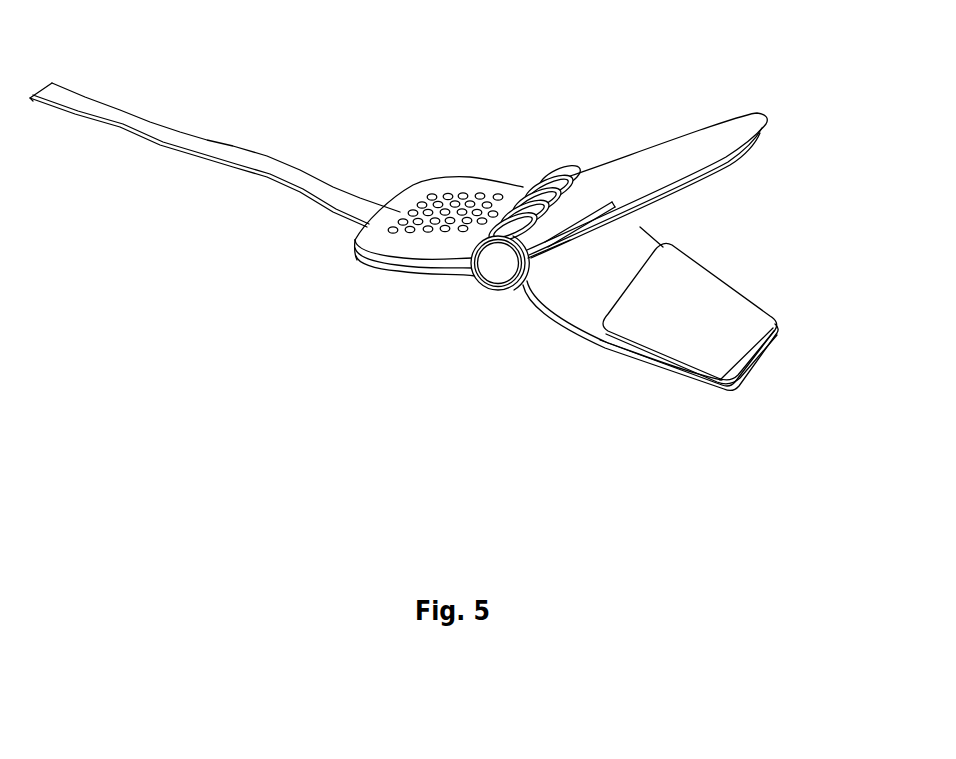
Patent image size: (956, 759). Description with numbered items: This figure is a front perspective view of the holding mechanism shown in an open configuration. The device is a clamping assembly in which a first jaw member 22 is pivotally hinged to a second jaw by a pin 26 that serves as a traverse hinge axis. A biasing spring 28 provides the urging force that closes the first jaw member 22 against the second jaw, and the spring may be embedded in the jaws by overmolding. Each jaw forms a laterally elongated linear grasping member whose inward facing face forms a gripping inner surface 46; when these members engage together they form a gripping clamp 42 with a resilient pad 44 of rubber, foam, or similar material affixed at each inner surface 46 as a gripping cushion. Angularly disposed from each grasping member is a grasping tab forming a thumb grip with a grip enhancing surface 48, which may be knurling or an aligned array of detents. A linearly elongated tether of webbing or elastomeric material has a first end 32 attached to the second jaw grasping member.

The first jaw member 22 is at (687, 151).
The pin 26 is at (497, 268).
The biasing spring 28 is at (597, 206).
The first end 32 is at (166, 107).
The gripping clamp 42 is at (791, 132).
The resilient pad 44 is at (669, 208).
The inner surface 46 is at (578, 306).
The grip enhancing surface 48 is at (449, 202).